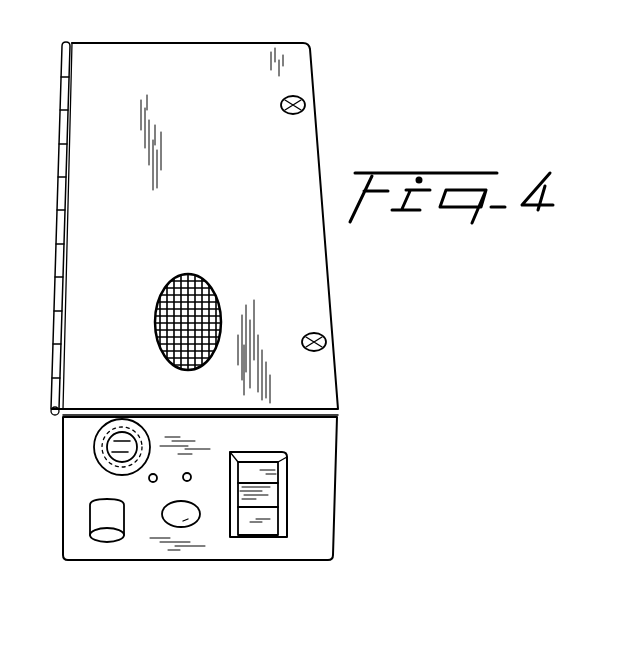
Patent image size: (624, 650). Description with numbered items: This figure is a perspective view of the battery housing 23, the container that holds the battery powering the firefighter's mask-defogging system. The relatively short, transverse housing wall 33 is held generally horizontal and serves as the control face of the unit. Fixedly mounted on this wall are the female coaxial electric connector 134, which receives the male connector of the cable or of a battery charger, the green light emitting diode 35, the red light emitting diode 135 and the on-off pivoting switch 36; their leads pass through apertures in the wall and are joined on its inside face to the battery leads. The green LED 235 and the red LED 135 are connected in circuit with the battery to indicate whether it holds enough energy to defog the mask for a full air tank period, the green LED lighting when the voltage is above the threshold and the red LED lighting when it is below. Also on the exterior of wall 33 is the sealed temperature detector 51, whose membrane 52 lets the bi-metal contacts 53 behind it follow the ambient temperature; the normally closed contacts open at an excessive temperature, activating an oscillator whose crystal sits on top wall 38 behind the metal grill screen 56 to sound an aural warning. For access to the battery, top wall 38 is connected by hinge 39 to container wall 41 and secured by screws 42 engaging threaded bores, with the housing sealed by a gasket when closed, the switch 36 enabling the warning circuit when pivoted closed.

The battery housing 23 is at (361, 437).
The transverse housing wall 33 is at (62, 533).
The green light emitting diode 35 is at (190, 528).
The on-off pivoting switch 36 is at (272, 531).
The top wall 38 is at (213, 65).
The hinge 39 is at (63, 95).
The container wall 41 is at (62, 493).
The screws 42 is at (305, 102).
The sealed temperature detector 51 is at (103, 435).
The membrane 52 is at (136, 443).
The bi-metal contacts 53 is at (134, 447).
The metal grill screen 56 is at (221, 298).
The female coaxial electric connector 134 is at (110, 541).
The red light emitting diode 135 is at (189, 481).
The green light emitting diode 235 is at (153, 483).